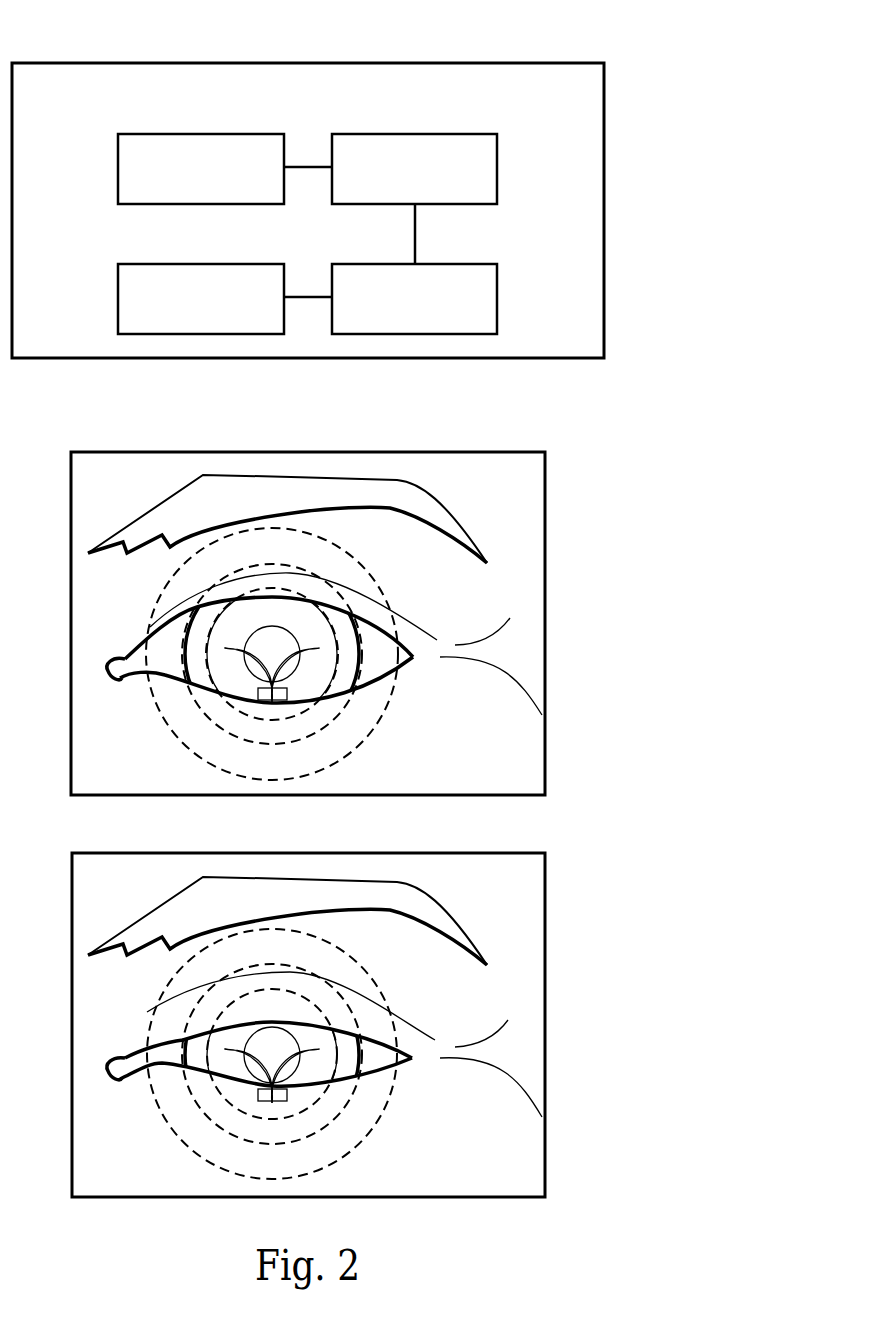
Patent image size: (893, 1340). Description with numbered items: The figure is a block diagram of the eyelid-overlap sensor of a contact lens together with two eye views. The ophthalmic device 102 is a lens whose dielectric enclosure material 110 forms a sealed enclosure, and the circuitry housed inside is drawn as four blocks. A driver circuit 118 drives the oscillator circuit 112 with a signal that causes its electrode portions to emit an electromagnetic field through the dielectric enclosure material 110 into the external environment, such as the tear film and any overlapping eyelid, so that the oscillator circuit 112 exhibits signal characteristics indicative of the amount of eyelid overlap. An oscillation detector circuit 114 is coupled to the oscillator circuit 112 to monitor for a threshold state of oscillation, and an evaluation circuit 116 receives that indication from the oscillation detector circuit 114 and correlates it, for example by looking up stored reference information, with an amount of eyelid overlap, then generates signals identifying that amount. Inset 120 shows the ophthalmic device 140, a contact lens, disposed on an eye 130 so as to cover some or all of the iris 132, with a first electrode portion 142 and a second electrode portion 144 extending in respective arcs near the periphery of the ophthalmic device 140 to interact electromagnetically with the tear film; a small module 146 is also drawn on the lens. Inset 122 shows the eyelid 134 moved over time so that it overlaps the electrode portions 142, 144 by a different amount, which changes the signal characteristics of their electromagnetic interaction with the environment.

The ophthalmic device 102 is at (148, 56).
The dielectric enclosure material 110 is at (560, 115).
The oscillator circuit 112 is at (498, 157).
The oscillation detector circuit (ODC) 114 is at (497, 310).
The evaluation circuit 116 is at (118, 312).
The driver circuit 118 is at (118, 157).
The inset 120 is at (430, 447).
The inset 122 is at (432, 1206).
The eye 130 is at (377, 640).
The iris 132 is at (247, 612).
The eyelid 134 is at (378, 692).
The ophthalmic device 140 is at (188, 630).
The first electrode portion 142 is at (227, 672).
The second electrode portion 144 is at (313, 677).
The electronics module 146 is at (267, 700).